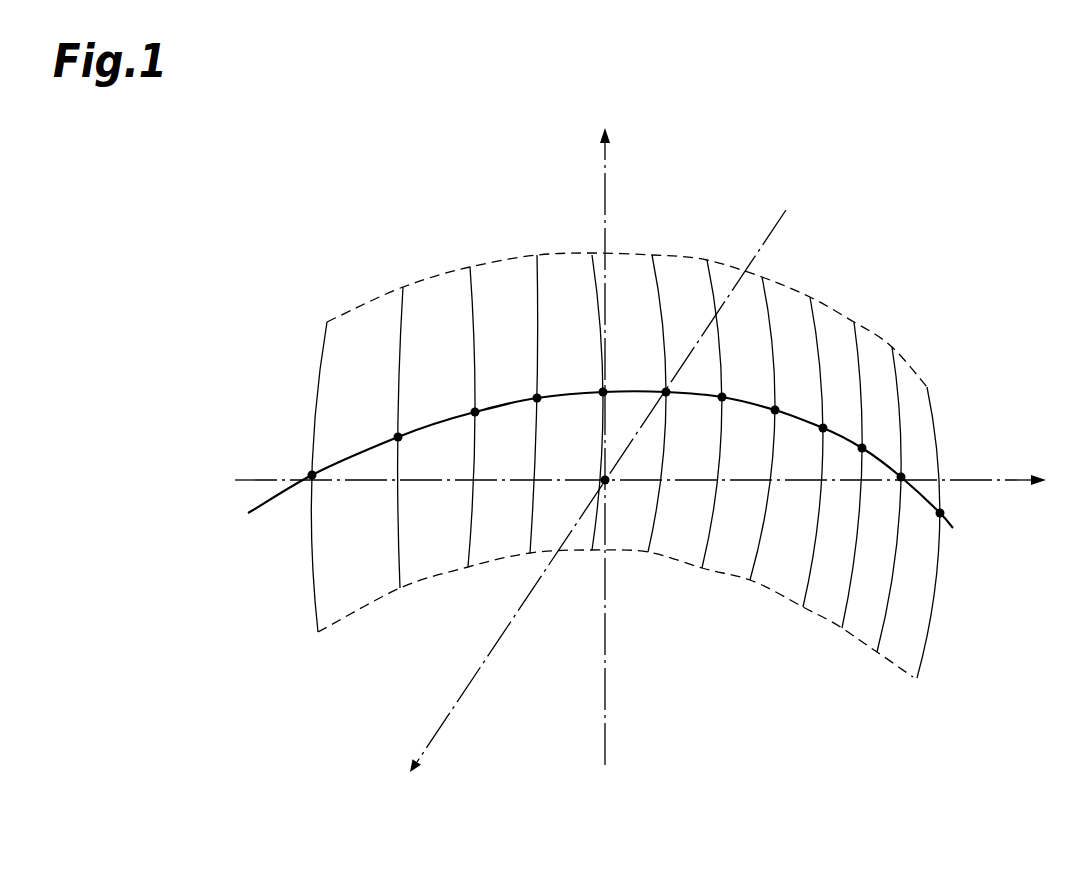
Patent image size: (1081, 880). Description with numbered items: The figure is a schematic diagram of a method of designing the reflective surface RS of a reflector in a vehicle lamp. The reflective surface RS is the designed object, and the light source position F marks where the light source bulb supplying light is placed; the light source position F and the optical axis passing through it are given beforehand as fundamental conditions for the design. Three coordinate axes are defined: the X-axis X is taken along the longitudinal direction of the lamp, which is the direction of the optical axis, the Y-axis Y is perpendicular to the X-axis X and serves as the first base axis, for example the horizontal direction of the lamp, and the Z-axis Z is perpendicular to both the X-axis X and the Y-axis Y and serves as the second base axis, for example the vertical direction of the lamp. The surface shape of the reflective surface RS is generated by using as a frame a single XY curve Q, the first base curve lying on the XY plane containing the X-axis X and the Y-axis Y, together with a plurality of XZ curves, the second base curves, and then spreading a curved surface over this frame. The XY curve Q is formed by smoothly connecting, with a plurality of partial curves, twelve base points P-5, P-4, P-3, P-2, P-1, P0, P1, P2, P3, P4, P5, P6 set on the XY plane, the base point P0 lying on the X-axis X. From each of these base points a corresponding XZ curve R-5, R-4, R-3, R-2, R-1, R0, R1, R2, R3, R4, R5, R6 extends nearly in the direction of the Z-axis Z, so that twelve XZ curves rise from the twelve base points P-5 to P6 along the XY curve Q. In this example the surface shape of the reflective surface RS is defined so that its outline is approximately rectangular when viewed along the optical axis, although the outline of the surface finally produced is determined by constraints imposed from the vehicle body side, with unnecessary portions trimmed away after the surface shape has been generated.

The Z-axis Z is at (620, 445).
The Y-axis Y is at (641, 463).
The X-axis X is at (584, 509).
The light source position F is at (607, 486).
The XY curve Q is at (348, 453).
The reflective surface RS is at (903, 647).
The XZ curve R-5 is at (322, 345).
The XZ curve R-4 is at (405, 306).
The XZ curve R-3 is at (472, 287).
The XZ curve R-2 is at (538, 278).
The XZ curve R-1 is at (594, 266).
The XZ curve R0 is at (654, 273).
The XZ curve R1 is at (712, 280).
The XZ curve R2 is at (767, 295).
The XZ curve R3 is at (815, 320).
The XZ curve R4 is at (860, 347).
The XZ curve R5 is at (897, 377).
The XZ curve R6 is at (935, 418).
The base point P-5 is at (310, 478).
The base point P-4 is at (396, 439).
The base point P-3 is at (473, 414).
The base point P-2 is at (535, 401).
The base point P-1 is at (601, 394).
The base point P0 is at (668, 394).
The base point P1 is at (724, 399).
The base point P2 is at (777, 412).
The base point P3 is at (824, 430).
The base point P4 is at (863, 450).
The base point P5 is at (902, 479).
The base point P6 is at (941, 515).